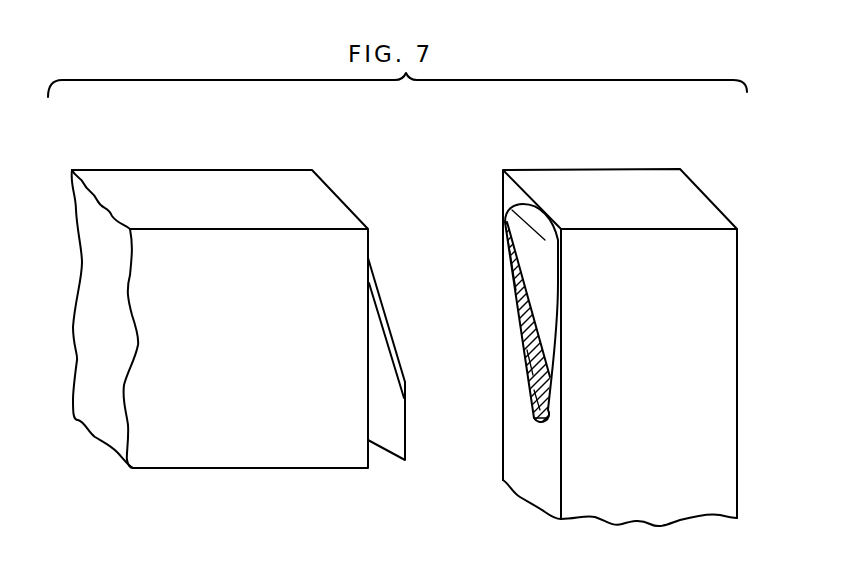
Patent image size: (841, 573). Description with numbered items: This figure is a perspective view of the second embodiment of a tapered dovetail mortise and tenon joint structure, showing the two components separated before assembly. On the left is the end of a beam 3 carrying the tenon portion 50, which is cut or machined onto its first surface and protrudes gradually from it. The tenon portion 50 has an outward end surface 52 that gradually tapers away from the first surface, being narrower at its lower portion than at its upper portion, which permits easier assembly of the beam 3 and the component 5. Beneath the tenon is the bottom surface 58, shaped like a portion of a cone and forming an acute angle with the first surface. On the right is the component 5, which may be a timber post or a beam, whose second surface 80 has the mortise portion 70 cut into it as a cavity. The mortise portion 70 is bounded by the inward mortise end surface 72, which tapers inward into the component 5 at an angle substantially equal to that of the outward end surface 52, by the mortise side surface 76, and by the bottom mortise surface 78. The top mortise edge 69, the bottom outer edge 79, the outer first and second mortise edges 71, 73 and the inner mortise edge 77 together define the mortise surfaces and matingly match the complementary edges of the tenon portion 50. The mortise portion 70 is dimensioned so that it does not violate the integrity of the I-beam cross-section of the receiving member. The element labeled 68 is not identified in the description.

The beam 3 is at (205, 157).
The component 5 is at (640, 533).
The tenon portion 50 is at (308, 480).
The outward end surface 52 is at (386, 317).
The bottom surface 58 is at (383, 450).
The side wall 68 is at (503, 219).
The top mortise edge 69 is at (539, 215).
The mortise portion 70 is at (521, 511).
The outer first mortise edge 71 is at (561, 352).
The inward mortise end surface 72 is at (531, 257).
The outer second mortise edge 73 is at (527, 362).
The mortise side surface 76 is at (527, 337).
The inner second mortise edge 77 is at (517, 283).
The bottom mortise surface 78 is at (535, 398).
The bottom outer mortise edge 79 is at (540, 421).
The second surface 80 is at (530, 468).